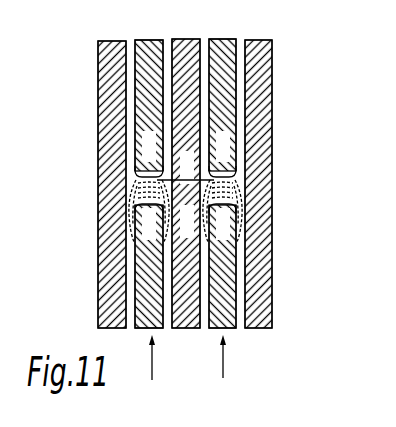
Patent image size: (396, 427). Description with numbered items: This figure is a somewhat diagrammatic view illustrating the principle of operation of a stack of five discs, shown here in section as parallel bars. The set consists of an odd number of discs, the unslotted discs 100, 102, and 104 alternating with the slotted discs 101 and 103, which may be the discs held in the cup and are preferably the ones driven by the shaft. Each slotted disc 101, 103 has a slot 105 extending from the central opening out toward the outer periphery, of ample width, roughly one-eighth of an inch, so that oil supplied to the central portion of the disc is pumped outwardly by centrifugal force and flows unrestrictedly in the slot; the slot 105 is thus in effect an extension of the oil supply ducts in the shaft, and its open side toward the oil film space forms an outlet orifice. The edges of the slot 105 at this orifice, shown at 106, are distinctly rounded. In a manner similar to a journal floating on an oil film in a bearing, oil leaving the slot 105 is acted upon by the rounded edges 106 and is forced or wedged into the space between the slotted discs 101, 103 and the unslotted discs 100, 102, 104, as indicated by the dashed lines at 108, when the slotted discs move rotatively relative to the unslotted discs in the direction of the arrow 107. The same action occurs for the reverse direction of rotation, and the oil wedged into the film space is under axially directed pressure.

The unslotted disc 100 is at (110, 41).
The slotted disc 101 is at (148, 41).
The unslotted disc 102 is at (187, 40).
The slotted disc 103 is at (223, 40).
The unslotted disc 104 is at (255, 41).
The slot 105 is at (185, 167).
The rounded edges 106 is at (185, 185).
The arrow 107 is at (152, 362).
The wedged oil 108 is at (126, 219).